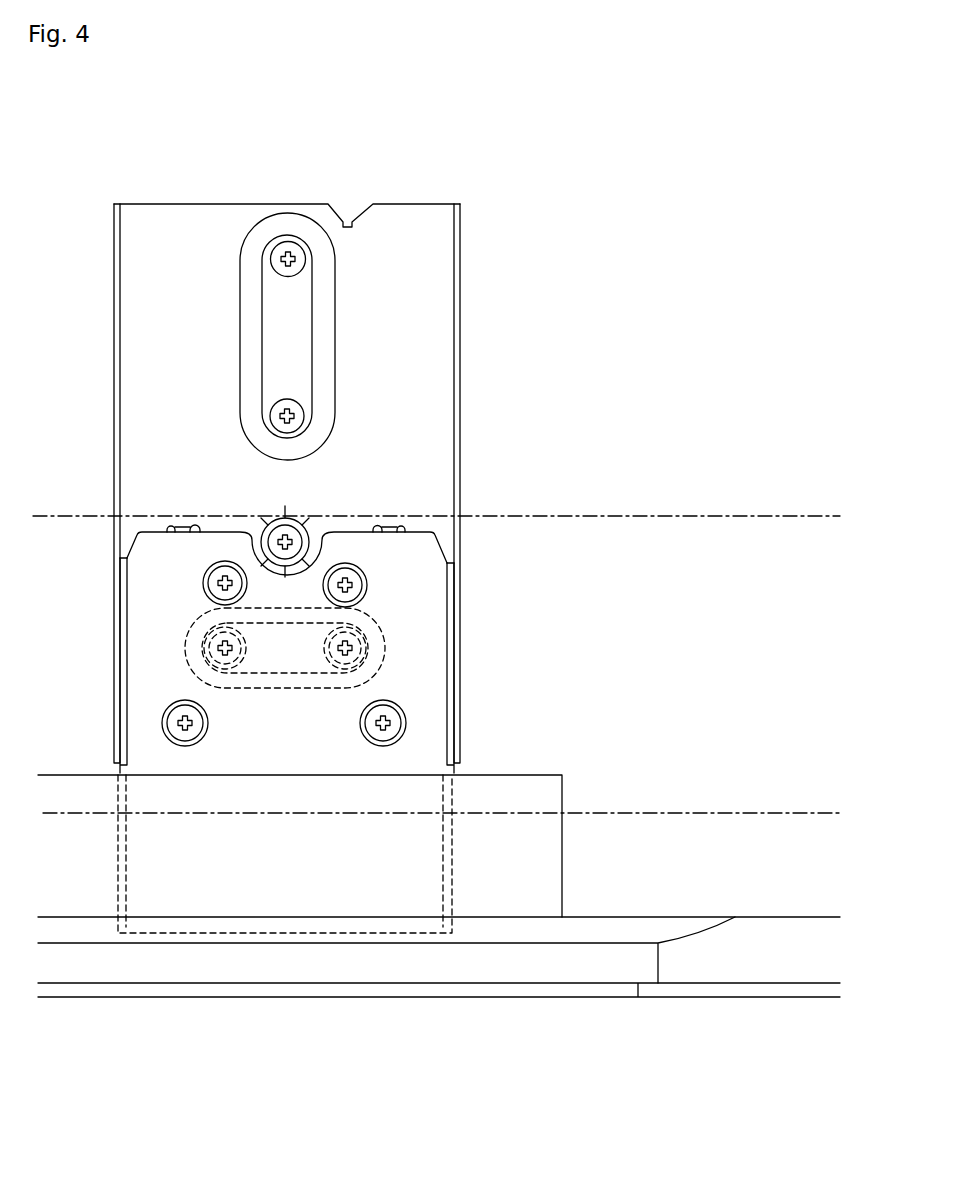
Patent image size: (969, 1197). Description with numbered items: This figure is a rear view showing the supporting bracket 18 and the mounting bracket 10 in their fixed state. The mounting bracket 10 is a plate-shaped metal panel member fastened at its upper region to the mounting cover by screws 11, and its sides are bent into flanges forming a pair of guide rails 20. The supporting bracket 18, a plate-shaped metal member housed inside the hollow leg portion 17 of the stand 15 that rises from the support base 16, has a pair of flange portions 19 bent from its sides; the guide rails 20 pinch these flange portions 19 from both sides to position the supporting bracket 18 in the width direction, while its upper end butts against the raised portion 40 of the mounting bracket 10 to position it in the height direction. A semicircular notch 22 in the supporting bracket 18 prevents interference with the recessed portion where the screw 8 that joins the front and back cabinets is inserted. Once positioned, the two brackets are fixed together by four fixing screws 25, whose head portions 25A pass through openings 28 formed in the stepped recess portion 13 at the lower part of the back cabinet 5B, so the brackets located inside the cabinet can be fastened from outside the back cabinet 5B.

The mounting bracket 10 is at (420, 348).
The screws 11 is at (305, 410).
The guide rails 20 is at (462, 252).
The raised portion 40 is at (192, 514).
The screws 8 is at (300, 508).
The stepped recess portion 13 is at (695, 522).
The openings 28 is at (340, 572).
The head portions 25A is at (205, 568).
The fixing screws 25 is at (383, 723).
The flange portions 19 is at (448, 607).
The semicircular notch 22 is at (290, 567).
The supporting bracket 18 is at (432, 740).
The back cabinet 5B is at (683, 813).
The leg portion 17 is at (515, 877).
The support base 16 is at (618, 933).
The stand 15 is at (725, 907).